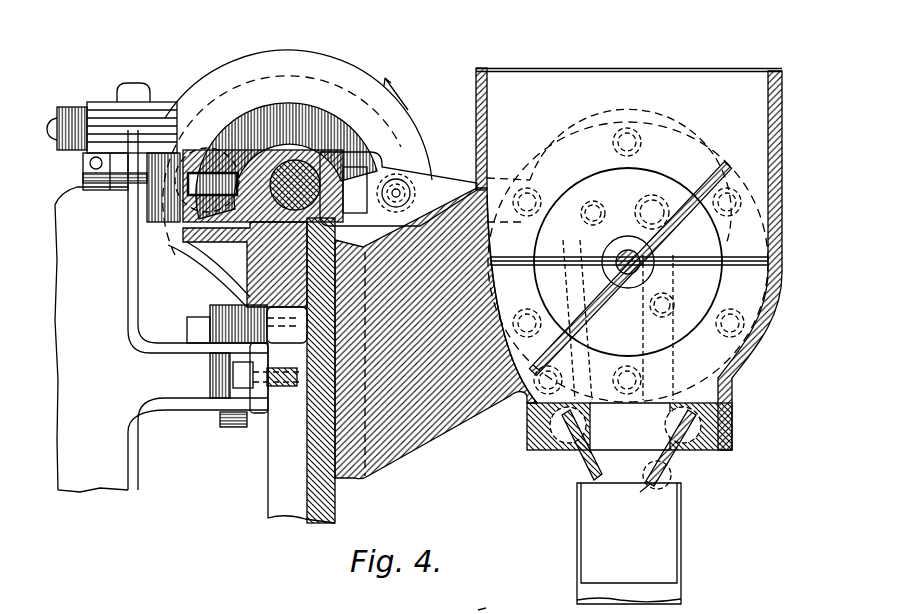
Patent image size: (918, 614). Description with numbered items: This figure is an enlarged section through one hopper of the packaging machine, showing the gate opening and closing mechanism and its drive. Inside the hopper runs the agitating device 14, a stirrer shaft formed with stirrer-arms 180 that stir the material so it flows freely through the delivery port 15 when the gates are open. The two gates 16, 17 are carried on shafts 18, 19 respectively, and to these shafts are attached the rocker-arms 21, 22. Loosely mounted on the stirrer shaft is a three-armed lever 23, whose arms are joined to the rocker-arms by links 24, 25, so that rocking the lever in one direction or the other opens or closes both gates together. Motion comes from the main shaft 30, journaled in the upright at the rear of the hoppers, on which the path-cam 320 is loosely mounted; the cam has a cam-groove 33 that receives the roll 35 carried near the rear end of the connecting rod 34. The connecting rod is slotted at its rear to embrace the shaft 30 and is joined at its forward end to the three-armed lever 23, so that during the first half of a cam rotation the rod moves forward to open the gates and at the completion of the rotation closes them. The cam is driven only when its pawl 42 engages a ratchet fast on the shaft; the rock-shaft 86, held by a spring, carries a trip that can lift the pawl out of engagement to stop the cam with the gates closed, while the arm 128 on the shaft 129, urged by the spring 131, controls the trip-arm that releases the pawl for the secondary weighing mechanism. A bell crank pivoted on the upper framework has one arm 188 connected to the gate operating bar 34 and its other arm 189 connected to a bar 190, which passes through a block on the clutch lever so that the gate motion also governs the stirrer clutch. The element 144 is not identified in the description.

The agitating device 14 is at (621, 283).
The delivery port 15 is at (620, 437).
The gate 16 is at (587, 465).
The gate 17 is at (683, 460).
The shaft 18 is at (548, 443).
The shaft 19 is at (697, 436).
The rocker-arm 21 is at (520, 416).
The rocker-arm 22 is at (683, 458).
The three-armed lever 23 is at (657, 268).
The link 24 is at (572, 281).
The link 25 is at (668, 368).
The shaft 30 is at (302, 103).
The cam-groove 33 is at (395, 160).
The connecting rod 34 is at (452, 175).
The roll 35 is at (445, 183).
The pawl 42 is at (212, 112).
The rock-shaft 86 is at (233, 428).
The arm 128 is at (268, 613).
The shaft 129 is at (50, 137).
The spring 131 is at (70, 105).
The base 144 is at (498, 607).
The stirrer-arm 180 is at (710, 167).
The bell crank arm 188 is at (137, 233).
The bell crank arm 189 is at (147, 187).
The bar 190 is at (64, 262).
The path-cam 320 is at (350, 77).